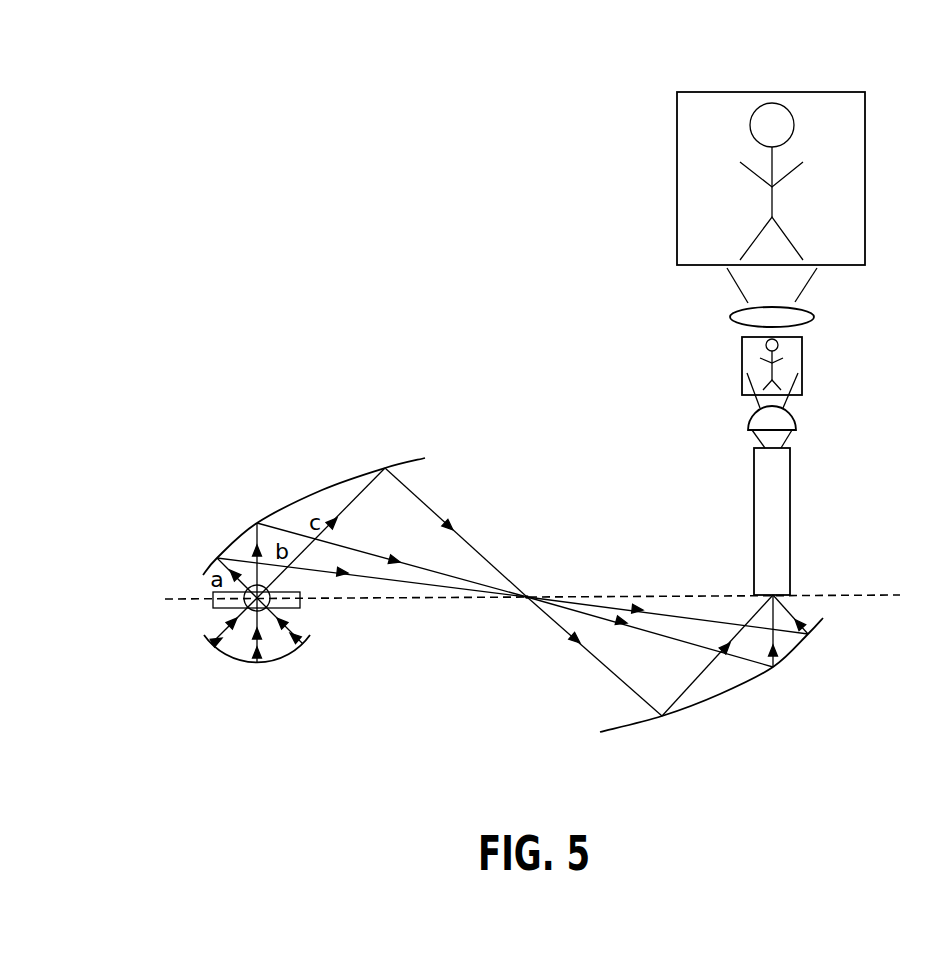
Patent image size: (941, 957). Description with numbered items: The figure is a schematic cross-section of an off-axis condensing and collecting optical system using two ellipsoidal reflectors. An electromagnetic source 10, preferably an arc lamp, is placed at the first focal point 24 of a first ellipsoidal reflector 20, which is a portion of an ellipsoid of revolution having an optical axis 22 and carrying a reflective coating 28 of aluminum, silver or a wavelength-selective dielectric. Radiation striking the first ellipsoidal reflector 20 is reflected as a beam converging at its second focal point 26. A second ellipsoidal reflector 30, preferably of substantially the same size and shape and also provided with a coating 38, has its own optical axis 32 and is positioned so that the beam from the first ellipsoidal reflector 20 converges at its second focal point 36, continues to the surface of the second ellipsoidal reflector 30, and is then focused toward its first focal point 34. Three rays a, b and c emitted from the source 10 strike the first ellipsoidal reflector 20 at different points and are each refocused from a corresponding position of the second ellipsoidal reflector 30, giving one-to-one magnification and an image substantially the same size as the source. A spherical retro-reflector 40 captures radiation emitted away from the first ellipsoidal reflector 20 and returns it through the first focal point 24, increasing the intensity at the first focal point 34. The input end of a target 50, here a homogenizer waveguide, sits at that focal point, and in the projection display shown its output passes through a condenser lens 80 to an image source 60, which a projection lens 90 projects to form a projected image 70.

The electromagnetic source 10 is at (220, 616).
The first ellipsoidal reflector 20 is at (322, 490).
The optical axis 22 is at (193, 594).
The first focal point 24 is at (277, 607).
The second focal point 26 is at (528, 595).
The reflective coating 28 is at (408, 468).
The second ellipsoidal reflector 30 is at (716, 703).
The optical axis 32 is at (685, 594).
The first focal point 34 is at (777, 597).
The second focal point 36 is at (527, 608).
The coating 38 is at (624, 728).
The retro-reflector 40 is at (273, 668).
The target 50 is at (790, 527).
The image source 60 is at (802, 365).
The projected image 70 is at (865, 185).
The condenser lens 80 is at (793, 420).
The projection lens 90 is at (807, 320).